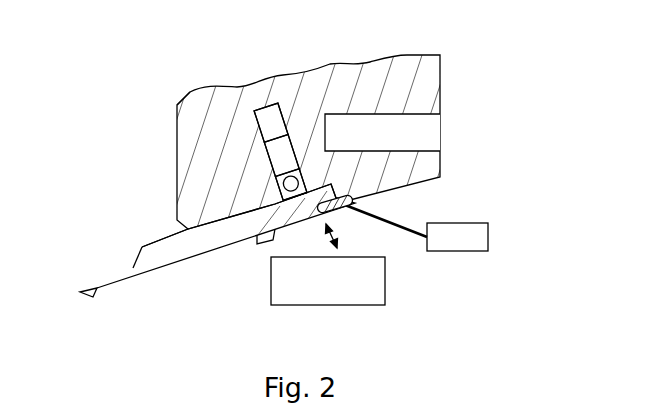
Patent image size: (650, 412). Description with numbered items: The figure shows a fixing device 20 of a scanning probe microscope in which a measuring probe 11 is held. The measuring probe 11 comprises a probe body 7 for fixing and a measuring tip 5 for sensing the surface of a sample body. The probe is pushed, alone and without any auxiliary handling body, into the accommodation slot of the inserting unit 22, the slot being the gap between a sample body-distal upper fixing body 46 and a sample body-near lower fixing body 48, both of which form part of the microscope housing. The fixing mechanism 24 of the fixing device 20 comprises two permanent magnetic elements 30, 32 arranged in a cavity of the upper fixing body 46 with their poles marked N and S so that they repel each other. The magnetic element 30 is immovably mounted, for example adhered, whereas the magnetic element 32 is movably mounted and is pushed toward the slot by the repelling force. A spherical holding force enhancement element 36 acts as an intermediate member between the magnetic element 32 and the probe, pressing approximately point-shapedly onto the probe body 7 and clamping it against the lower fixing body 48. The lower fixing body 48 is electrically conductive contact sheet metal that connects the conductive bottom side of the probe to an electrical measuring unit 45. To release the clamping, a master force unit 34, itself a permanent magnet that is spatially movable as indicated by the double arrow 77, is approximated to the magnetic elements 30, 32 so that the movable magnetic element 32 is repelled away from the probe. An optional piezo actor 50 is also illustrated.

The fixing device 20 is at (458, 86).
The upper fixing body 46 is at (193, 113).
The piezo actor 50 is at (425, 135).
The magnetic element 30 is at (239, 125).
The fixing mechanism 24 is at (240, 112).
The magnetic element 32 is at (273, 163).
The holding force enhancement element 36 is at (282, 187).
The probe body 7 is at (217, 276).
The measuring tip 5 is at (88, 295).
The measuring probe 11 is at (130, 242).
The lower fixing body 48 is at (352, 205).
The electrical measuring unit 45 is at (458, 222).
The double arrow 77 is at (340, 238).
The master force unit 34 is at (385, 279).
The inserting unit 22 is at (222, 205).